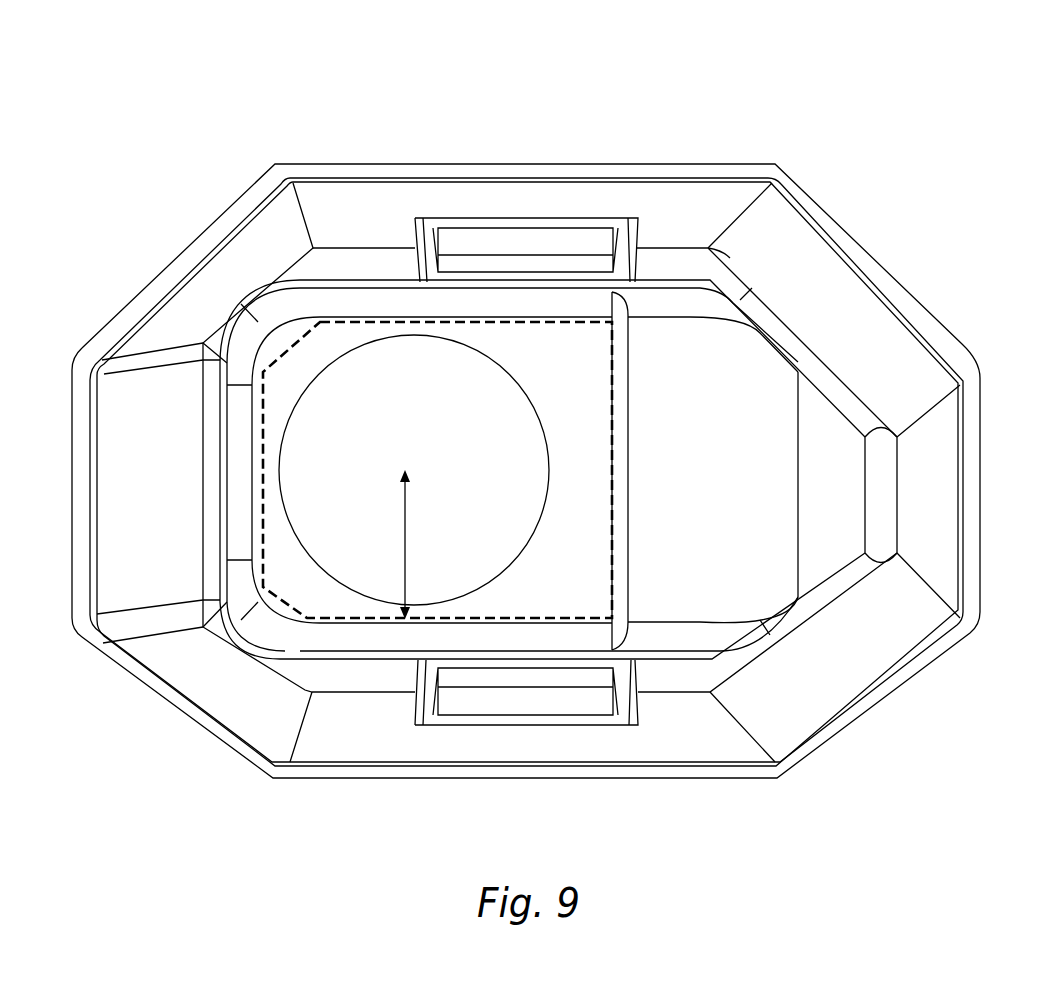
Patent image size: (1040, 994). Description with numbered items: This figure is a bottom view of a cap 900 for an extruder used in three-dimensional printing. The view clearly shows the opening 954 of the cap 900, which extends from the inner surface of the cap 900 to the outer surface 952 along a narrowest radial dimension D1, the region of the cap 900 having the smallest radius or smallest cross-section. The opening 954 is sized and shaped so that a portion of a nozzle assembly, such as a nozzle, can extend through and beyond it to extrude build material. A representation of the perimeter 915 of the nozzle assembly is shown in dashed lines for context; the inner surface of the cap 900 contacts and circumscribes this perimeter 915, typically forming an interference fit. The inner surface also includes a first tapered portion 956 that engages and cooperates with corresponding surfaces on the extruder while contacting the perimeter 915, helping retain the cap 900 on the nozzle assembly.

The cap 900 is at (103, 92).
The perimeter of the nozzle assembly 915 is at (262, 536).
The outer surface 952 is at (580, 589).
The opening 954 is at (470, 462).
The first tapered portion 956 is at (735, 475).
The narrowest radial dimension D1 is at (404, 535).